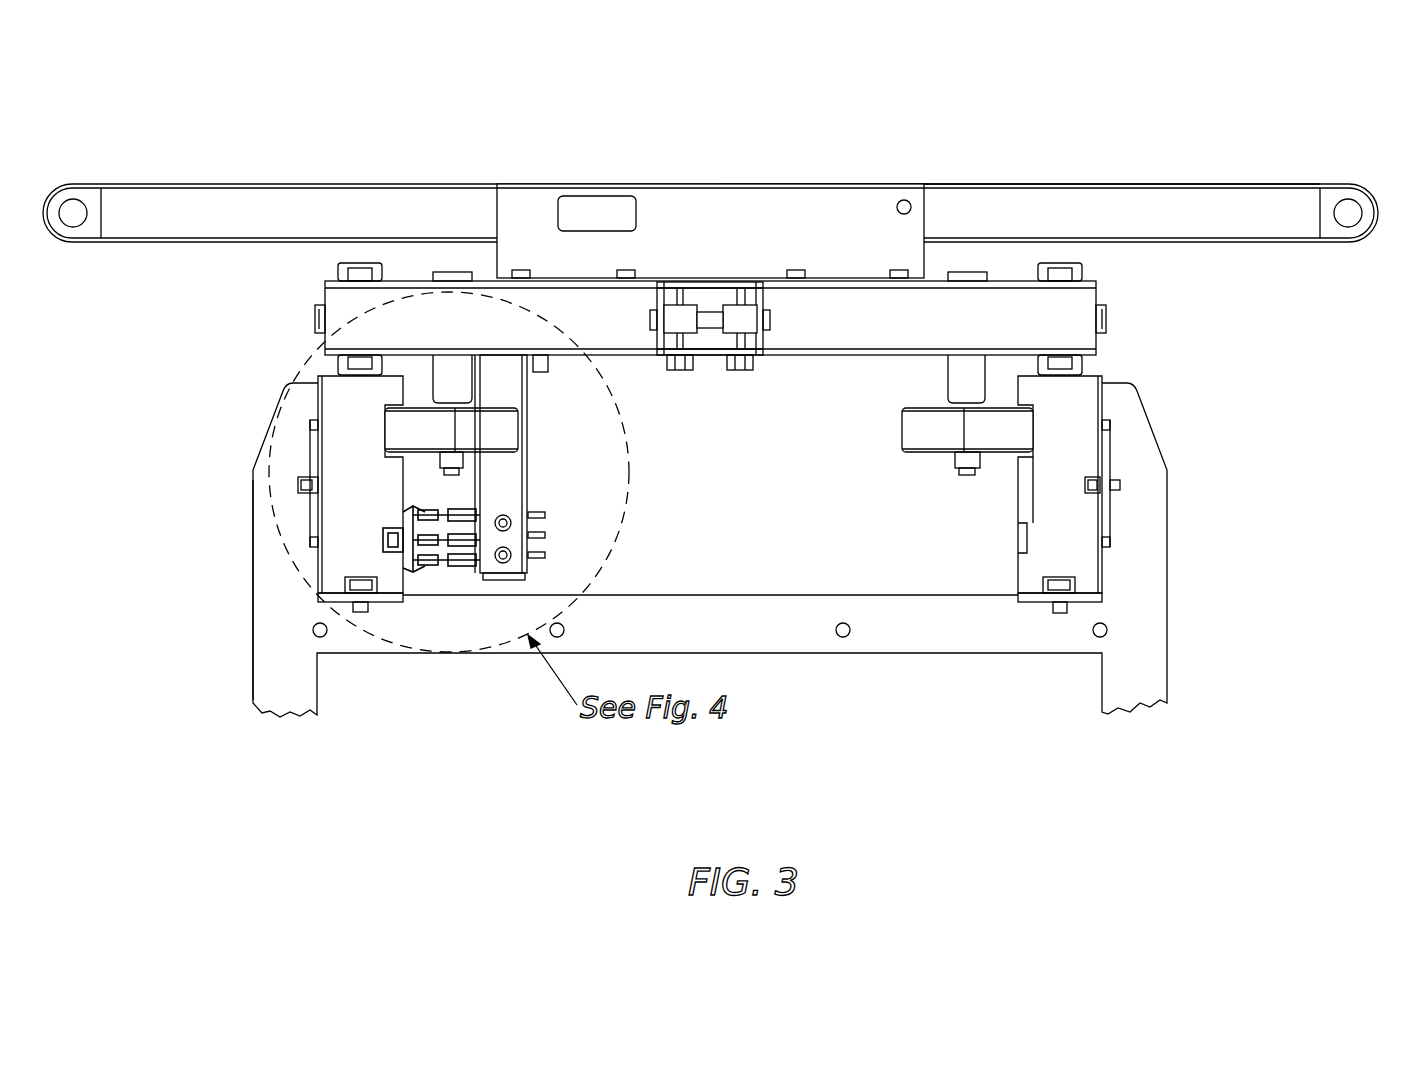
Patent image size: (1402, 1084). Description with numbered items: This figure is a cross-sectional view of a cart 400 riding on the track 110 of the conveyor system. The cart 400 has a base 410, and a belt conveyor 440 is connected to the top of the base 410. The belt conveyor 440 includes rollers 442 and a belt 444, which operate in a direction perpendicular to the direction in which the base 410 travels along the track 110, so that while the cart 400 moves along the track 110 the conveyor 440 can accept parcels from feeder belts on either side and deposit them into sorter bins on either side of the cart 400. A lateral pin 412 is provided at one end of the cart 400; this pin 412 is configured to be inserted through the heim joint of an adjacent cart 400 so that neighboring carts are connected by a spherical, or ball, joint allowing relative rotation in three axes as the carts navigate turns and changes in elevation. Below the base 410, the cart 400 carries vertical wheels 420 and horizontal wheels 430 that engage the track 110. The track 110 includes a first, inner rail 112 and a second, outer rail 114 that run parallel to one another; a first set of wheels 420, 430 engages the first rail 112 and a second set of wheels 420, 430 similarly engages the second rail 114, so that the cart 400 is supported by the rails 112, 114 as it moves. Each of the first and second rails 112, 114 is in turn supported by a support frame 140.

The track 110 is at (1158, 447).
The first rail 112 is at (292, 380).
The second rail 114 is at (1102, 380).
The support frame 140 is at (253, 562).
The cart 400 is at (692, 279).
The base 410 is at (324, 295).
The lateral pin 412 is at (708, 305).
The vertical wheels 420 is at (338, 368).
The horizontal wheels 430 is at (500, 412).
The belt conveyor 440 is at (210, 183).
The rollers 442 is at (73, 218).
The belt 444 is at (1005, 183).